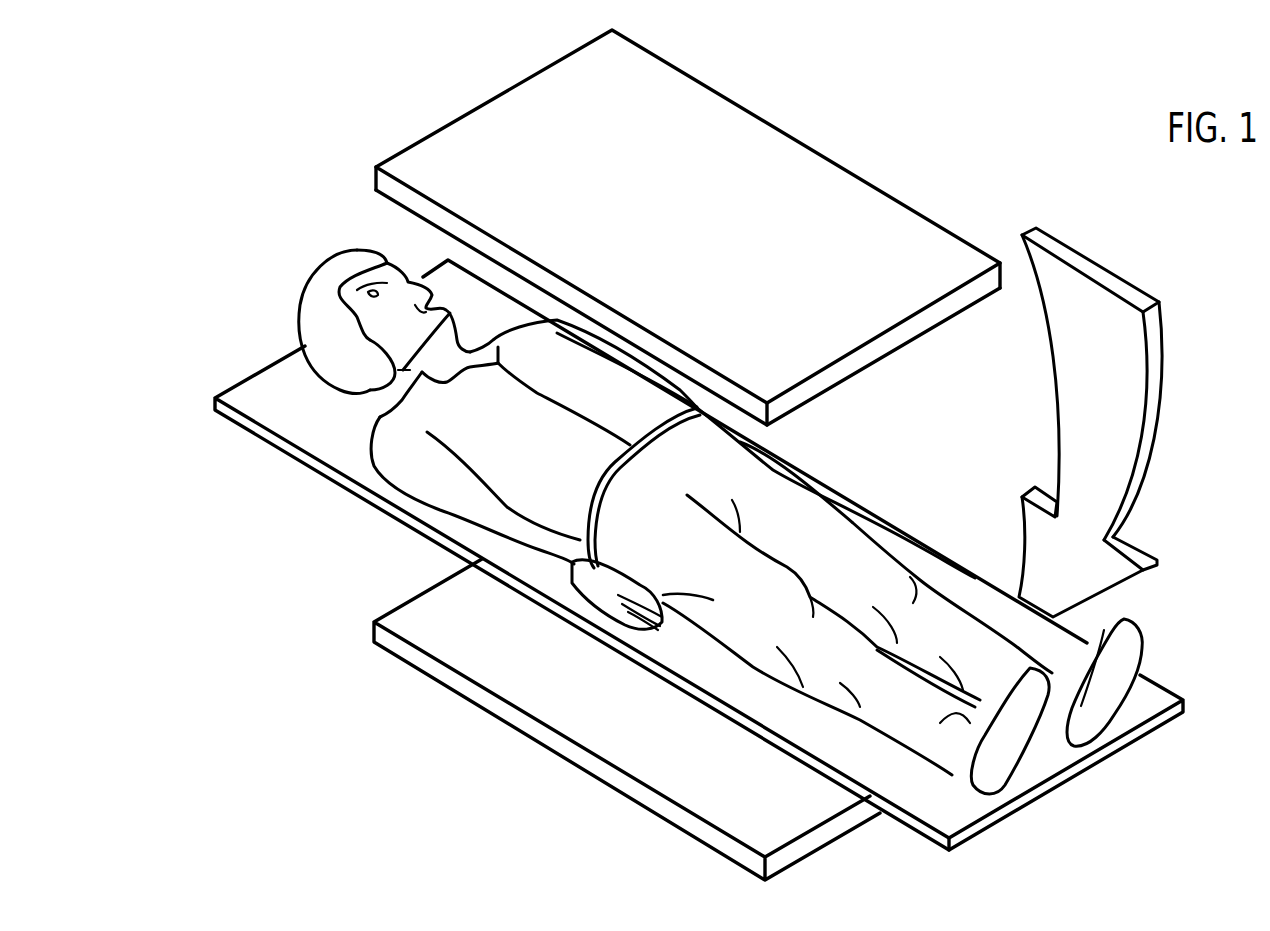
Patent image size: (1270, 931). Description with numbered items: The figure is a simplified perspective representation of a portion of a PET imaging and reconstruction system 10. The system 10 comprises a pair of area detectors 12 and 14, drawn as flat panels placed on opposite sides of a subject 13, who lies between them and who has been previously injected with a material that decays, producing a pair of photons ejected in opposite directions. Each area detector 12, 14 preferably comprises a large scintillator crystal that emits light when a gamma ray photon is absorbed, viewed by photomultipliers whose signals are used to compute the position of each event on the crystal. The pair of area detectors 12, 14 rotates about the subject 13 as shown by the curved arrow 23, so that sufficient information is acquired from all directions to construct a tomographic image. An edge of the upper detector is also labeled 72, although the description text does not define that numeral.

The PET imaging and reconstruction system 10 is at (373, 82).
The area detector 12 is at (700, 108).
The edge of upper panel 72 is at (383, 180).
The subject 13 is at (318, 322).
The arrow 23 is at (1120, 386).
The area detector 14 is at (453, 680).